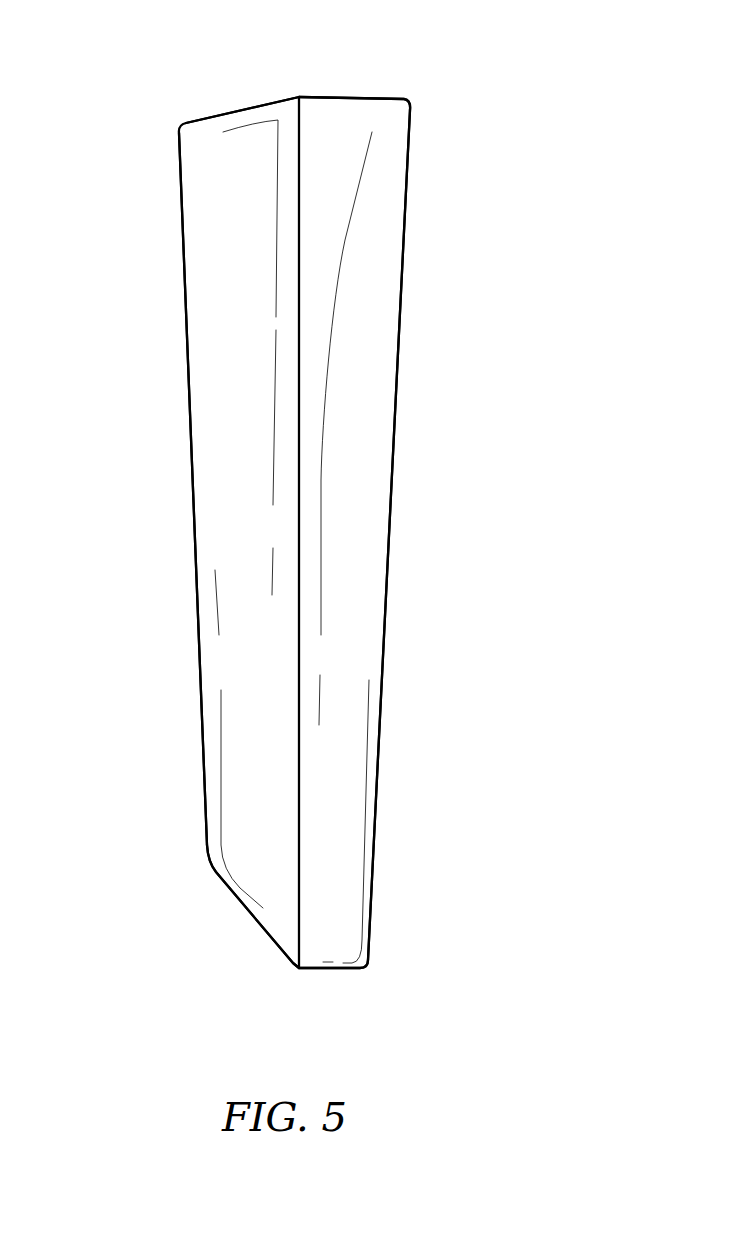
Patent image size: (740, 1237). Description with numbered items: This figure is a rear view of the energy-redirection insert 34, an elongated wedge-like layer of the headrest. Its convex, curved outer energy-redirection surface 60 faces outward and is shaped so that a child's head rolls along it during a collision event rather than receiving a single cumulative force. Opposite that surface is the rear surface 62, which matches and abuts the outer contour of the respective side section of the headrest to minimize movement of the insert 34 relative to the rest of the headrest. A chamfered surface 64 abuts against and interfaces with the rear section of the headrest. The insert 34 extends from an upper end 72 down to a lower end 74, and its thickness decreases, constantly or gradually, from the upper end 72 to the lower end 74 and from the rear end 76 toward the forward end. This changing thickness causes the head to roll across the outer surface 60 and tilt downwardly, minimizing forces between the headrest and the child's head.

The energy-redirection insert 34 is at (293, 531).
The outer energy-redirection surface 60 is at (380, 749).
The rear surface 62 is at (192, 458).
The chamfered surface 64 is at (230, 515).
The upper end 72 is at (310, 97).
The lower end 74 is at (293, 965).
The rear end 76 is at (300, 489).